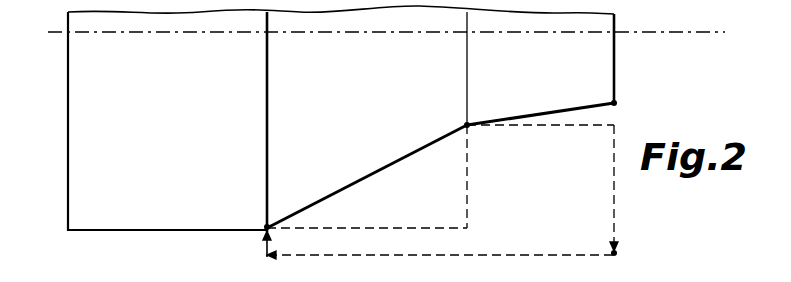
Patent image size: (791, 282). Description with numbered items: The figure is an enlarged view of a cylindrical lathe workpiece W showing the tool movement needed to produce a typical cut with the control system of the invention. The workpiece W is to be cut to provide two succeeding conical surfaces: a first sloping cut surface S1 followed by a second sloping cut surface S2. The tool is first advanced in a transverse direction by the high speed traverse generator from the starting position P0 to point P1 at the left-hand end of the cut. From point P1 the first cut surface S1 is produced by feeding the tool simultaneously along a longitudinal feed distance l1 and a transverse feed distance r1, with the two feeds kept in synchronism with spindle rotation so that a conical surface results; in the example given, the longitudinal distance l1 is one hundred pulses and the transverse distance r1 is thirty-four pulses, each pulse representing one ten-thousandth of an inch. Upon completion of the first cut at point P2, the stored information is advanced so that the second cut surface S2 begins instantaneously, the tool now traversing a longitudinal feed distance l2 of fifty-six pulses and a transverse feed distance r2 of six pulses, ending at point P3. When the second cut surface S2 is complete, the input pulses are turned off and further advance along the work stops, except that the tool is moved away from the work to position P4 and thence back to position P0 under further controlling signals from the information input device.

The workpiece W is at (105, 112).
The starting position P0 is at (266, 257).
The point P1 is at (266, 227).
The point P2 is at (469, 124).
The point P3 is at (616, 104).
The position P4 is at (617, 252).
The first sloping cut surface S1 is at (344, 187).
The second sloping cut surface S2 is at (532, 114).
The longitudinal feed distance l1 is at (368, 228).
The longitudinal feed distance l2 is at (529, 126).
The transverse feed distance r1 is at (468, 178).
The transverse feed distance r2 is at (612, 115).